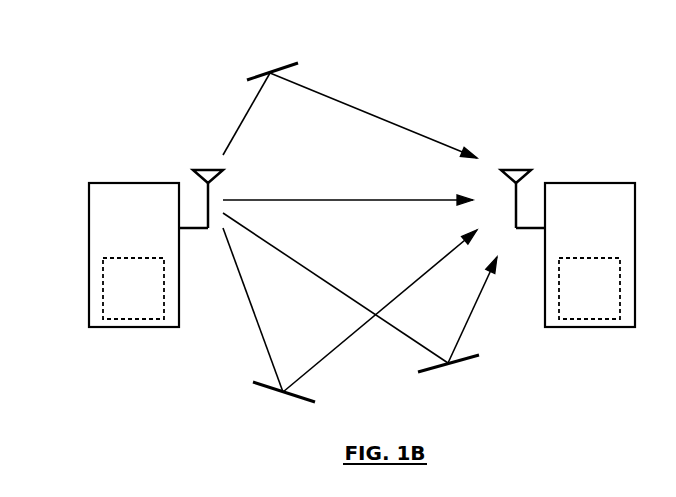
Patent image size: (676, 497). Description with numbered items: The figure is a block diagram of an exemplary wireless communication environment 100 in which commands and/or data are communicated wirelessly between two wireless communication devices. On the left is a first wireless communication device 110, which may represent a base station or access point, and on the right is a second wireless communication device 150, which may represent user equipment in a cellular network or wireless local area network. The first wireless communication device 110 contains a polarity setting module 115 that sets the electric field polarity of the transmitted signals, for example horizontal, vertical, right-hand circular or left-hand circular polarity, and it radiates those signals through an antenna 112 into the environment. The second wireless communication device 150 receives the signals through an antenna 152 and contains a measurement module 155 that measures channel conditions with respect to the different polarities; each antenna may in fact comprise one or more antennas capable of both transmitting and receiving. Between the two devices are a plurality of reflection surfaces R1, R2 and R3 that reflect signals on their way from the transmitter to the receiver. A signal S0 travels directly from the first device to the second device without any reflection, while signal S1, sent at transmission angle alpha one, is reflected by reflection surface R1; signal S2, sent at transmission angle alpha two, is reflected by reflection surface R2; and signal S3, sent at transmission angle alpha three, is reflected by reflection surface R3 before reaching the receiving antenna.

The wireless communication environment 100 is at (160, 390).
The first wireless communication device 110 is at (134, 255).
The antenna 112 is at (208, 198).
The polarity setting module 115 is at (133, 288).
The second wireless communication device 150 is at (590, 255).
The antenna 152 is at (518, 198).
The measurement module 155 is at (589, 288).
The signal S0 is at (357, 197).
The signal S1 is at (395, 123).
The signal S2 is at (247, 288).
The signal S3 is at (313, 270).
The reflection surface R1 is at (255, 78).
The reflection surface R2 is at (265, 387).
The reflection surface R3 is at (425, 372).